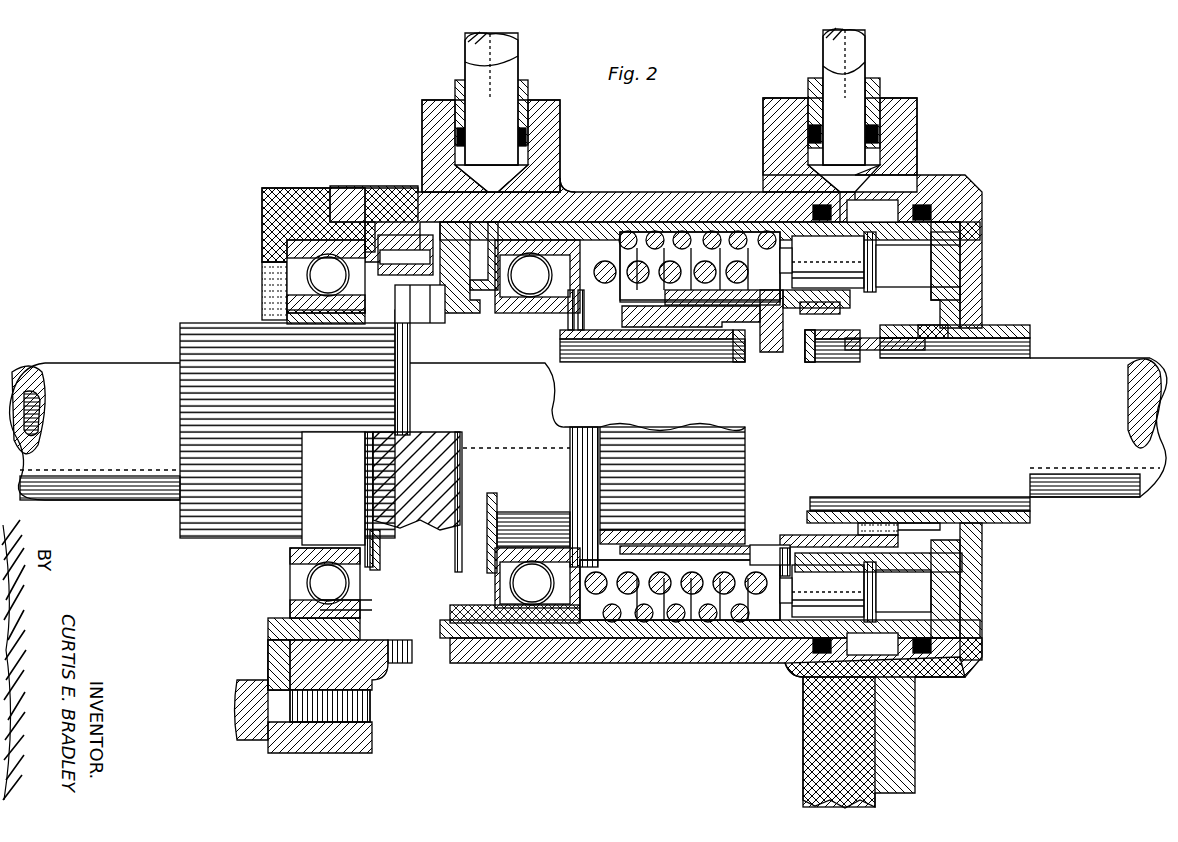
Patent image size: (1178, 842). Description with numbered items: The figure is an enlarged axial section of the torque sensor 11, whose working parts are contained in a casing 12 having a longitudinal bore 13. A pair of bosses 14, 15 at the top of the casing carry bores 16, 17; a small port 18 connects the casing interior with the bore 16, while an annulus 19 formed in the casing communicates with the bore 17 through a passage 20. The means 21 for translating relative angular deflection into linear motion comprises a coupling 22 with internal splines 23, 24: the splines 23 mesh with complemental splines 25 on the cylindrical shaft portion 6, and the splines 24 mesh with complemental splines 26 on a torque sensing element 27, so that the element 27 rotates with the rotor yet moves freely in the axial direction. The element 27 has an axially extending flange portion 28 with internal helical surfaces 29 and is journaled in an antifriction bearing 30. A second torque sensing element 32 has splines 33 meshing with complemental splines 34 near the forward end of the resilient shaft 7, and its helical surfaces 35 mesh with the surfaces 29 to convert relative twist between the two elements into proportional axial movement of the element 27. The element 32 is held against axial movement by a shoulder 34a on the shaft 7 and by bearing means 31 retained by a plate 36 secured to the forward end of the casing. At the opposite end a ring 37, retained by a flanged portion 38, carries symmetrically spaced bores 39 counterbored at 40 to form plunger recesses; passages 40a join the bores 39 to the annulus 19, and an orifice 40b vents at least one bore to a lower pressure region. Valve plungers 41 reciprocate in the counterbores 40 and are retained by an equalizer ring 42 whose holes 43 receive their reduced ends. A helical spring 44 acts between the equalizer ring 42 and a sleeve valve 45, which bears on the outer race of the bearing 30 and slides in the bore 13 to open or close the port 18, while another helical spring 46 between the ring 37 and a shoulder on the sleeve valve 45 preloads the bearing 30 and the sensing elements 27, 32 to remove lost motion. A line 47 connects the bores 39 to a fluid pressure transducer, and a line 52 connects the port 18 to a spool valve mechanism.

The cylindrical shaft portion 6 is at (985, 325).
The resilient shaft 7 is at (92, 362).
The torque sensor 11 is at (275, 188).
The casing 12 is at (770, 200).
The bore 13 is at (718, 230).
The boss 14 is at (420, 122).
The boss 15 is at (905, 128).
The bore 16 is at (458, 143).
The bore 17 is at (810, 155).
The port 18 is at (525, 200).
The annulus 19 is at (885, 210).
The passage 20 is at (850, 185).
The means for translating relative angular deflections into linear motion 21 is at (420, 630).
The coupling 22 is at (760, 350).
The internal splines 23 is at (878, 350).
The internal splines 24 is at (648, 330).
The complemental splines 25 is at (932, 340).
The complemental splines 26 is at (612, 335).
The torque sensing element 27 is at (548, 400).
The axially extending flange portion 28 is at (440, 230).
The helical surfaces 29 is at (418, 252).
The antifriction bearing 30 is at (543, 285).
The bearing means 31 is at (340, 285).
The second torque sensing element 32 is at (420, 305).
The splines 33 is at (305, 318).
The complemental splines 34 is at (495, 138).
The shoulder 34a is at (400, 390).
The helical surfaces 35 is at (362, 235).
The plate 36 is at (275, 242).
The ring 37 is at (975, 568).
The flanged portion 38 is at (972, 626).
The bores 39 is at (925, 280).
The counterbored portions 40 is at (865, 250).
The passages 40a is at (878, 235).
The orifice 40b is at (838, 318).
The valve plungers 41 is at (838, 264).
The equalizer ring 42 is at (750, 310).
The holes 43 is at (765, 560).
The helical spring 44 is at (630, 640).
The sleeve valve 45 is at (548, 232).
The helical spring 46 is at (628, 232).
The line 47 is at (860, 75).
The line 52 is at (465, 60).